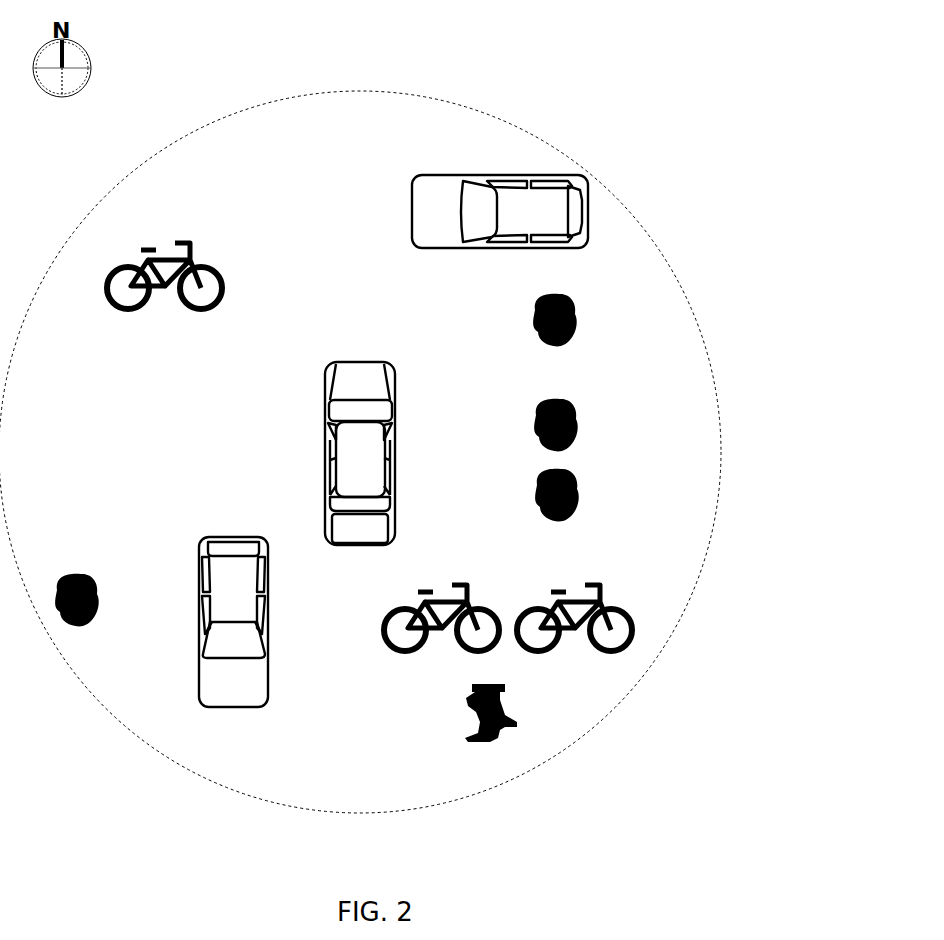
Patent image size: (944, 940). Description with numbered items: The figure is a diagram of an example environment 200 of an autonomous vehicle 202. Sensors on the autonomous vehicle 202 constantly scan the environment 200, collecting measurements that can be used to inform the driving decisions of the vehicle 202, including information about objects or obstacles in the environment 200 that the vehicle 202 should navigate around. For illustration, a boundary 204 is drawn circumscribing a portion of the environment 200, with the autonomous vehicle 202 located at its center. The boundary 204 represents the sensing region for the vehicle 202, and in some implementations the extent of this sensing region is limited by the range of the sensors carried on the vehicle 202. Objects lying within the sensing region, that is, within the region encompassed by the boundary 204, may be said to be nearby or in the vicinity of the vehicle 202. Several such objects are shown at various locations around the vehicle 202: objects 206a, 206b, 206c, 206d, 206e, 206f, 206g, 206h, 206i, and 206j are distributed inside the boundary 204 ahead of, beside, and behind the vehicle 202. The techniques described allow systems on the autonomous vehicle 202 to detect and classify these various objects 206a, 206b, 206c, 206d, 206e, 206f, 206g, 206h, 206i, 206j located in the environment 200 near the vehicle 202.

The environment 200 is at (577, 66).
The autonomous vehicle 202 is at (325, 382).
The boundary 204 is at (88, 213).
The object 206a is at (412, 181).
The object 206b is at (540, 298).
The object 206c is at (106, 280).
The object 206d is at (68, 576).
The object 206e is at (470, 694).
The object 206f is at (200, 545).
The object 206g is at (468, 586).
The object 206h is at (587, 586).
The object 206i is at (540, 405).
The object 206j is at (540, 475).